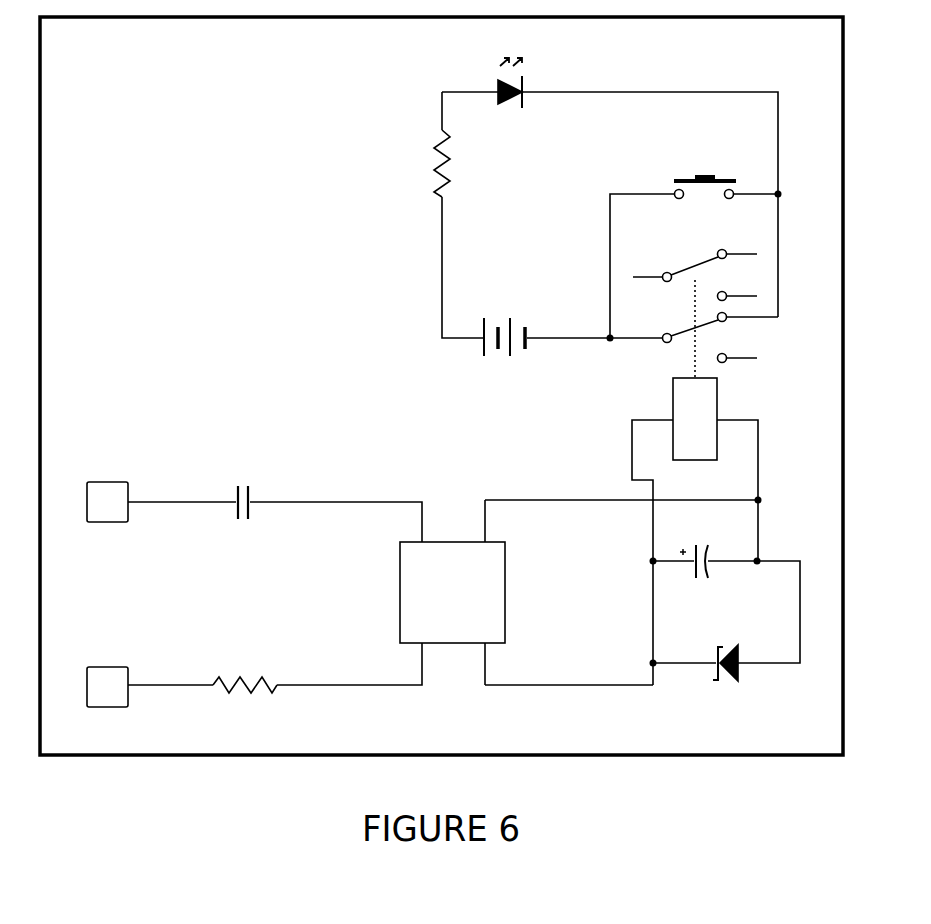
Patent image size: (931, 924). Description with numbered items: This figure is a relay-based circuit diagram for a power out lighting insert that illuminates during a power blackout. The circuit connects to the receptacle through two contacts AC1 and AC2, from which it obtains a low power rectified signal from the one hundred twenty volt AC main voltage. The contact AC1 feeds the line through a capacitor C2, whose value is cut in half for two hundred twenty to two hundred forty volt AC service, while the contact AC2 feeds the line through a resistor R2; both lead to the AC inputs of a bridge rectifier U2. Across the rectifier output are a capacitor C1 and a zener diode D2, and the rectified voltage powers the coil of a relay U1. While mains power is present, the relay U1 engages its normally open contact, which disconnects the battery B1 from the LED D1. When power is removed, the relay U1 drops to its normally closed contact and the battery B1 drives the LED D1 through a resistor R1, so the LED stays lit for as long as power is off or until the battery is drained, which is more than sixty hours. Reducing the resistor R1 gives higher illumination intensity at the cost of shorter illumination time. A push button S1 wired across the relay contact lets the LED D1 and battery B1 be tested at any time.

The light emitting diode LED D1 is at (540, 100).
The resistor R1 is at (418, 163).
The push-button switch SW-PB S1 is at (718, 191).
The battery B1 is at (505, 346).
The relay U1 is at (727, 355).
The electrolytic capacitor C1 is at (690, 544).
The zener diode ZENER2 D2 is at (748, 670).
The bridge rectifier BRIDGE2 U2 is at (508, 595).
The capacitor C2 is at (248, 487).
The resistor R2 is at (245, 671).
The contact AC1 is at (114, 488).
The contact AC2 is at (114, 672).